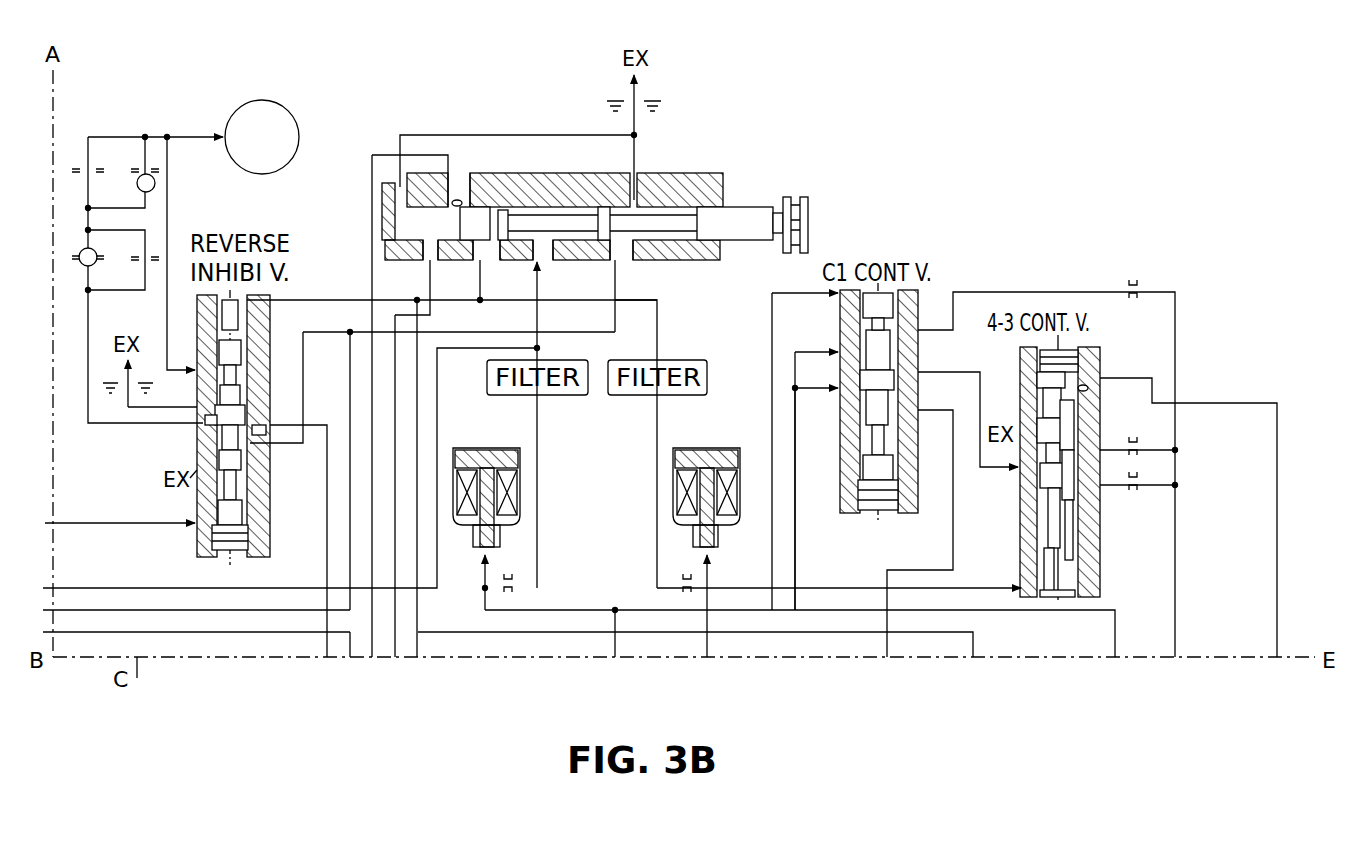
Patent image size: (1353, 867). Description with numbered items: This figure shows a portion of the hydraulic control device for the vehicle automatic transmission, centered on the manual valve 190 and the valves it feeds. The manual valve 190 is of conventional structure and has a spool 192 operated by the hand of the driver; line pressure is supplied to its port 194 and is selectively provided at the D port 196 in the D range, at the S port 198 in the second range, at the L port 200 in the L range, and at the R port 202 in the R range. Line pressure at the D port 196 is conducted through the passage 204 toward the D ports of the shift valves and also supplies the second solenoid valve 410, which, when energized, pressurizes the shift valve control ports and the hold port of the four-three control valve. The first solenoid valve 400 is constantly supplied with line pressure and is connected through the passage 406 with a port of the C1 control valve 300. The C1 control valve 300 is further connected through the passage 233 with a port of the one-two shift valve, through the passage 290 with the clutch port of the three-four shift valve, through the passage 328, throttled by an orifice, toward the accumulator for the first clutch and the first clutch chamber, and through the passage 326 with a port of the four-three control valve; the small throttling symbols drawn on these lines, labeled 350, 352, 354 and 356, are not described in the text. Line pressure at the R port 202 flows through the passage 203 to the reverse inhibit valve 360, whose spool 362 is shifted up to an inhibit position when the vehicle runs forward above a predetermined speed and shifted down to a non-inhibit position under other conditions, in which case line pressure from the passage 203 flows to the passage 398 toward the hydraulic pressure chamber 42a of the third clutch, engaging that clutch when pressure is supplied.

The hydraulic pressure chamber 42a is at (279, 108).
The manual valve 190 is at (557, 215).
The spool 192 is at (737, 238).
The port 194 is at (555, 269).
The D port 196 is at (497, 262).
The S port 198 is at (437, 178).
The L port 200 is at (432, 240).
The R port 202 is at (623, 249).
The passage 203 is at (657, 312).
The passage 204 is at (360, 493).
The passage 233 is at (953, 521).
The passage 290 is at (797, 563).
The C1 control valve 300 is at (932, 541).
The passage 326 is at (985, 372).
The passage 328 is at (1178, 312).
The orifice 350 is at (1140, 447).
The orifice 352 is at (1160, 457).
The orifice 354 is at (1140, 490).
The orifice 356 is at (1160, 493).
The reverse inhibit valve 360 is at (195, 546).
The spool 362 is at (262, 470).
The passage 398 is at (95, 310).
The first solenoid valve 400 is at (520, 506).
The passage 406 is at (801, 297).
The second solenoid valve 410 is at (671, 530).